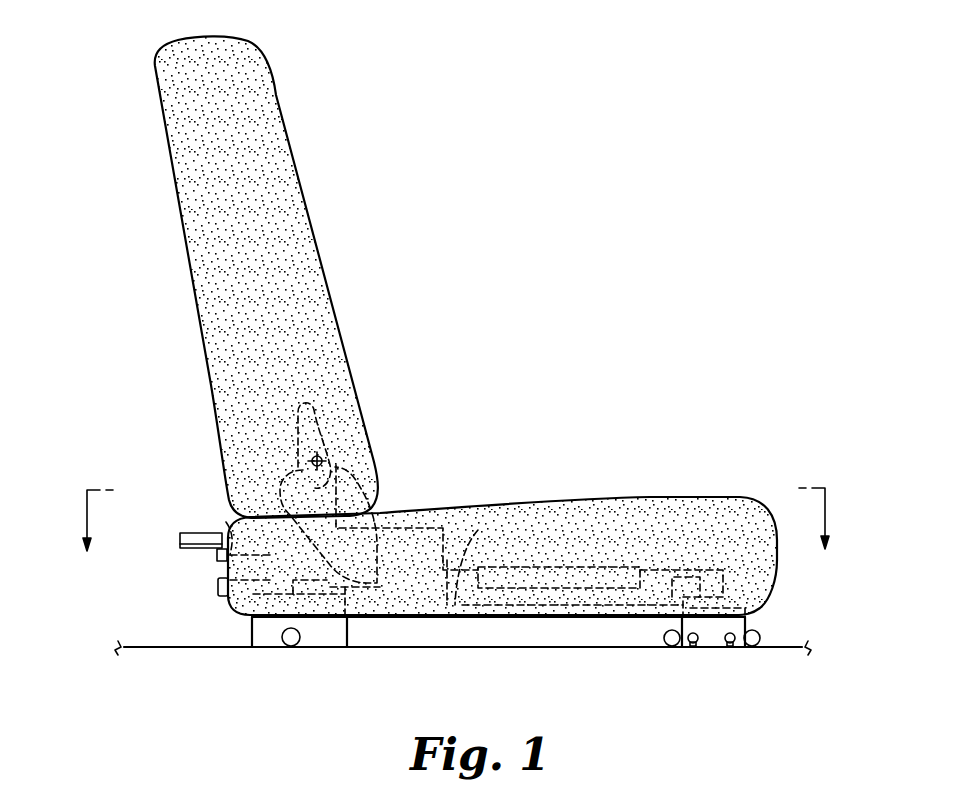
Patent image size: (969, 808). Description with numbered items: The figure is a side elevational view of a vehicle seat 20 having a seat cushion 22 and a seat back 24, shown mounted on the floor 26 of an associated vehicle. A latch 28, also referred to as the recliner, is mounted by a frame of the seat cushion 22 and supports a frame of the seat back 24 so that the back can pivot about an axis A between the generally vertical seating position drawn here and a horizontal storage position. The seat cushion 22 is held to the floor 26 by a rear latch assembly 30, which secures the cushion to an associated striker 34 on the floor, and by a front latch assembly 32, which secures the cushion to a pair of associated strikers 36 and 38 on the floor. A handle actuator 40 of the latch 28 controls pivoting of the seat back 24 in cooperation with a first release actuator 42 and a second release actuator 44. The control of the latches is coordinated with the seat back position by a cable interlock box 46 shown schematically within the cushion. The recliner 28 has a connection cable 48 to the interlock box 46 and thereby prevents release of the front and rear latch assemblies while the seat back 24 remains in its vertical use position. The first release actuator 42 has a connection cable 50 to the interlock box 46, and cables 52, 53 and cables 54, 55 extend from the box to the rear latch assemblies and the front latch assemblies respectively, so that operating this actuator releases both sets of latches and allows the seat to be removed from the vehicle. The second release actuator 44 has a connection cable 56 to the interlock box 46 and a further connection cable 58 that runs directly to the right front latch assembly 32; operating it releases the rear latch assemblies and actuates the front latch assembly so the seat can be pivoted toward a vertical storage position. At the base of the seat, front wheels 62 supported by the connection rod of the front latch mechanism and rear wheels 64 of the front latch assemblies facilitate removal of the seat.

The vehicle seat 20 is at (535, 286).
The seat cushion 22 is at (588, 497).
The seat back 24 is at (331, 298).
The axis A is at (321, 458).
The latch 28 is at (363, 499).
The floor 26 is at (550, 648).
The right rear latch assembly 30 is at (247, 630).
The right front latch assembly 32 is at (730, 625).
The striker 34 is at (290, 647).
The striker 36 is at (693, 647).
The striker 38 is at (733, 647).
The handle actuator 40 is at (180, 538).
The first release actuator 42 is at (220, 554).
The second release actuator 44 is at (218, 593).
The cable interlock box 46 is at (568, 565).
The connection cable 48 is at (443, 528).
The connection cable 50 is at (226, 522).
The cable 52 is at (300, 577).
The cable 53 is at (363, 605).
The cable 54 is at (682, 570).
The cable 55 is at (705, 570).
The connection cable 56 is at (216, 578).
The connection cable 58 is at (228, 608).
The front wheels 62 is at (763, 641).
The rear wheels 64 is at (661, 641).